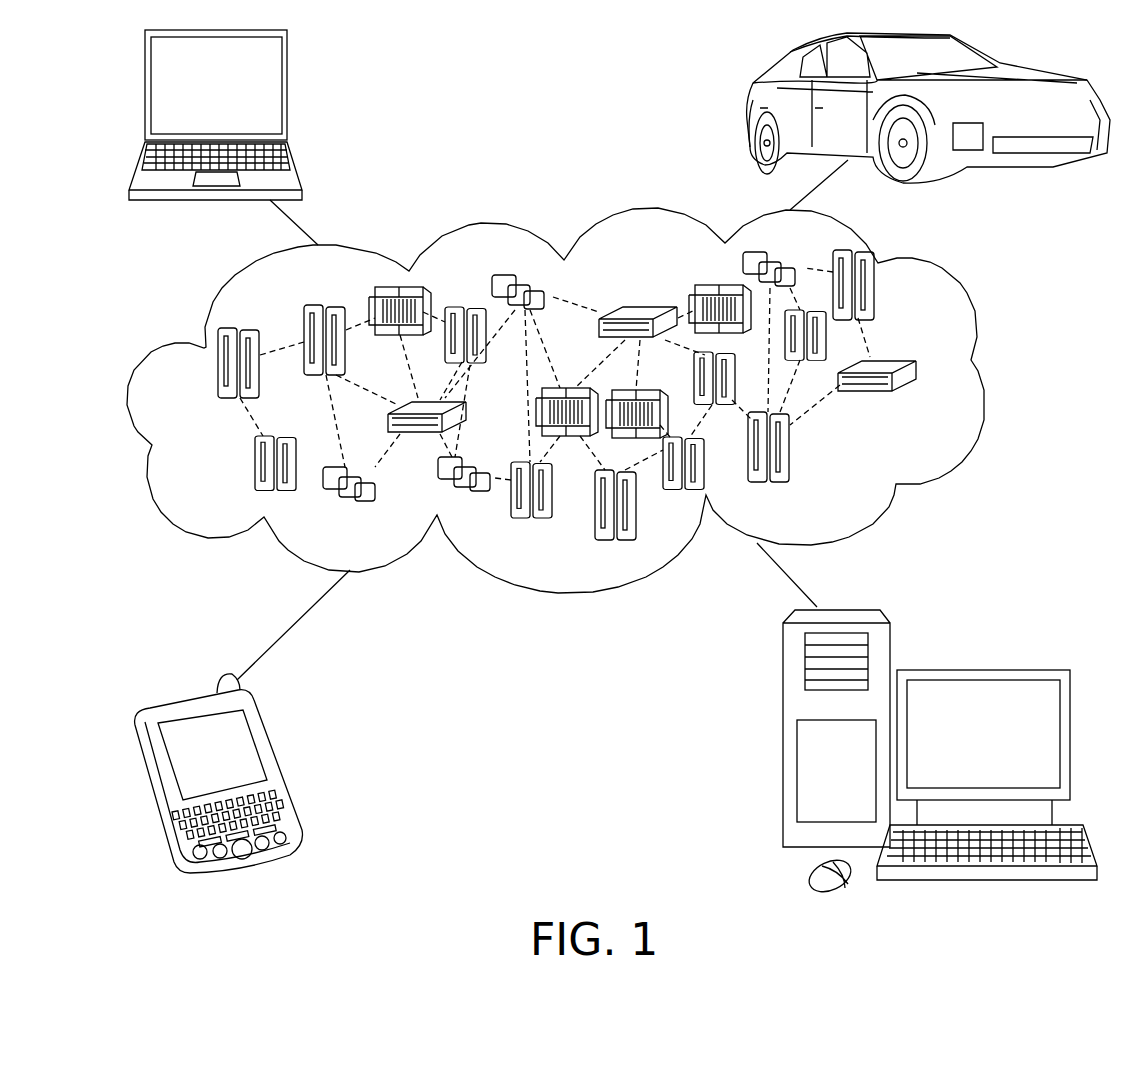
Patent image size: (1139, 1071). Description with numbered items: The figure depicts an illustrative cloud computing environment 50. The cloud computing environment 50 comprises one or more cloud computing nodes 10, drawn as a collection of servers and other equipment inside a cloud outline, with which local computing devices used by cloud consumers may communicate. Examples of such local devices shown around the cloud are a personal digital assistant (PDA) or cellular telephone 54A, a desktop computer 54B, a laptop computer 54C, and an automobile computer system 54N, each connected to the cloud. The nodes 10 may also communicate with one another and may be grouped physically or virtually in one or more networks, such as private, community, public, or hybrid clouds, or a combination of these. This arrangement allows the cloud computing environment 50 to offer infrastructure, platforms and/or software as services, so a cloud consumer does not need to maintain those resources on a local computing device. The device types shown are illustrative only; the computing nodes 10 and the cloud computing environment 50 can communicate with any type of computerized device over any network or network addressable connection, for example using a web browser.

The cloud computing nodes 10 is at (922, 401).
The cloud computing environment 50 is at (980, 372).
The personal digital assistant (PDA) or cellular telephone 54A is at (280, 770).
The desktop computer 54B is at (982, 668).
The laptop computer 54C is at (288, 94).
The automobile computer system 54N is at (748, 108).